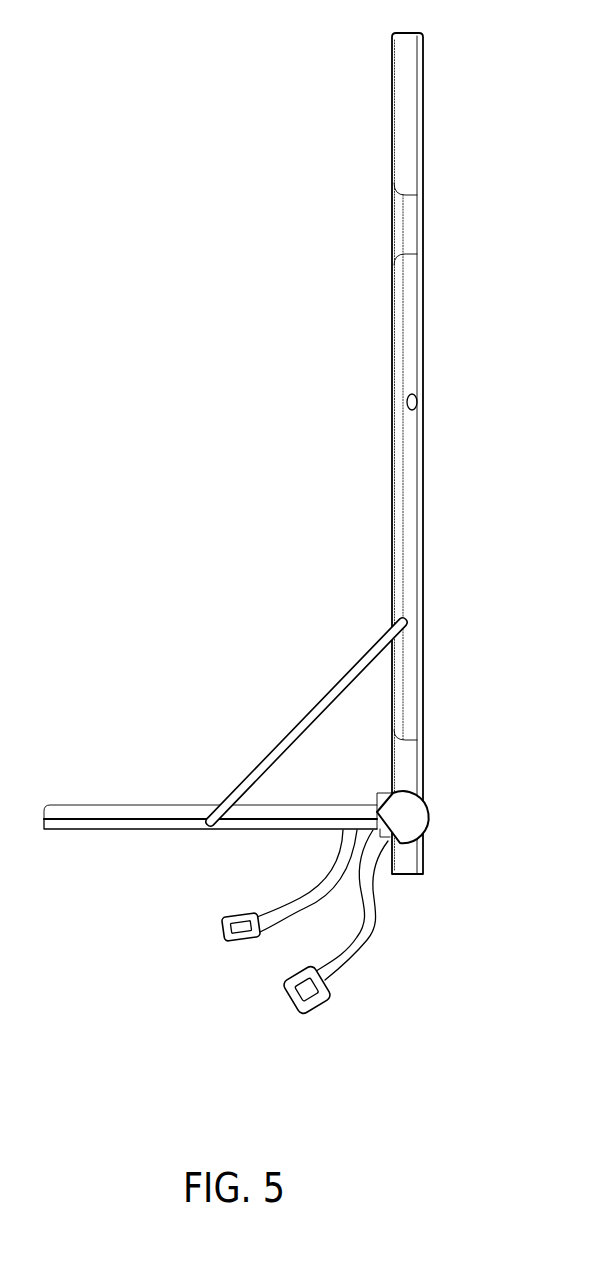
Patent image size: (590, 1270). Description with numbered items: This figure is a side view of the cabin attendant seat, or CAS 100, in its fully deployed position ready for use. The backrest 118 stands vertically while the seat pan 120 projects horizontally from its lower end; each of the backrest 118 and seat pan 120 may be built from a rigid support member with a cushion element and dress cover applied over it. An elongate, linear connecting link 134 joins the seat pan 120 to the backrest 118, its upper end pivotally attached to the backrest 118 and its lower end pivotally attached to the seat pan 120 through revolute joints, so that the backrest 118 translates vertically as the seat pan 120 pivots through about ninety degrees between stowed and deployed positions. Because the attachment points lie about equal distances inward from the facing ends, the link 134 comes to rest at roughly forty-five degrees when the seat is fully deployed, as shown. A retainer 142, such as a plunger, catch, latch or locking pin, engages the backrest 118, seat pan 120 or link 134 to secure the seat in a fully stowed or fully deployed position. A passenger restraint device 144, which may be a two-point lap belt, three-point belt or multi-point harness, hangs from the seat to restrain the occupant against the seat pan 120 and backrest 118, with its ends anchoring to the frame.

The CAS 100 is at (313, 524).
The backrest 118 is at (397, 537).
The seat pan 120 is at (112, 814).
The connecting link 134 is at (298, 718).
The retainer 142 is at (417, 402).
The passenger restraint device 144 is at (377, 937).